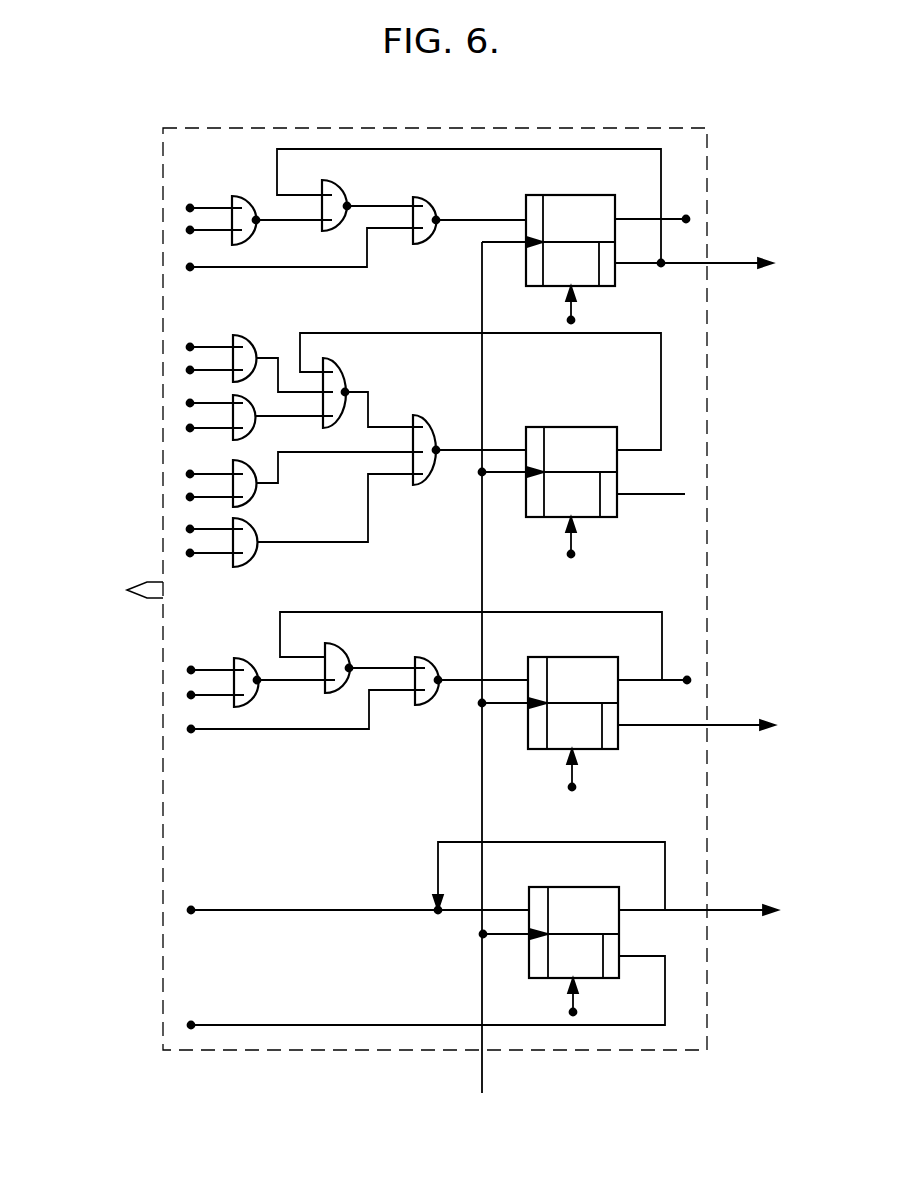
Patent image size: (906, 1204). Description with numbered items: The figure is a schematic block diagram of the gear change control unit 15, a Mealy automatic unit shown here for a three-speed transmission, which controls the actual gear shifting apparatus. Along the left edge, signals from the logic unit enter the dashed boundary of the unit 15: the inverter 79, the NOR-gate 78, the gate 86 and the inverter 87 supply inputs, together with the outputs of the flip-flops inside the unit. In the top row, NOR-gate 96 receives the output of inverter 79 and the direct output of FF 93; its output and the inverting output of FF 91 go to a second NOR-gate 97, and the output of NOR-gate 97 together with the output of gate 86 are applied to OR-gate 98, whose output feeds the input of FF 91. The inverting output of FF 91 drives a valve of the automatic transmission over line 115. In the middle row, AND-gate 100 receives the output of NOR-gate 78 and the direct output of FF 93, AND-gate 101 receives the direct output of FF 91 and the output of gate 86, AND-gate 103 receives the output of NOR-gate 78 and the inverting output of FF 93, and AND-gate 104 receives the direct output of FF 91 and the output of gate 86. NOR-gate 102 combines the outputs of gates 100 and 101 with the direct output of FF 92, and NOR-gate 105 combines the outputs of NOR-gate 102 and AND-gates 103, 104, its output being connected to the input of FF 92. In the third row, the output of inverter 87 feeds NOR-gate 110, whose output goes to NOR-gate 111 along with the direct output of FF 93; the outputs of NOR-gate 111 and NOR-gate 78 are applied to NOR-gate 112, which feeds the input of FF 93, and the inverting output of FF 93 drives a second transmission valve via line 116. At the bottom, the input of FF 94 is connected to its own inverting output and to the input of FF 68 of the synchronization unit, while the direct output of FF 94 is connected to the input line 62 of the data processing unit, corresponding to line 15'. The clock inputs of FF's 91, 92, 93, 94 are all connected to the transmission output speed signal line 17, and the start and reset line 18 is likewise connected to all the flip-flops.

The gear change control unit 15 is at (417, 610).
The line 15' is at (427, 992).
The transmission output speed signal line 17 is at (482, 973).
The start and reset line 18 is at (574, 318).
The input line 62 is at (748, 905).
The FF 68 is at (190, 910).
The NOR-gate 78 is at (190, 347).
The inverter 79 is at (190, 208).
The AND-gate 86 is at (190, 267).
The inverter 87 is at (190, 670).
The FF 91 is at (583, 210).
The FF 92 is at (583, 440).
The FF 93 is at (190, 230).
The FF 94 is at (590, 900).
The NOR-gate 96 is at (240, 206).
The NOR-gate 97 is at (333, 194).
The OR-gate 98 is at (425, 212).
The AND-gate 100 is at (245, 348).
The AND-gate 101 is at (247, 425).
The NOR-gate 102 is at (340, 392).
The AND-gate 103 is at (247, 490).
The AND-gate 104 is at (247, 553).
The NOR-gate 105 is at (420, 423).
The NOR-gate 110 is at (250, 690).
The NOR-gate 111 is at (334, 655).
The NOR-gate 112 is at (425, 665).
The line 115 is at (747, 262).
The line 116 is at (752, 724).